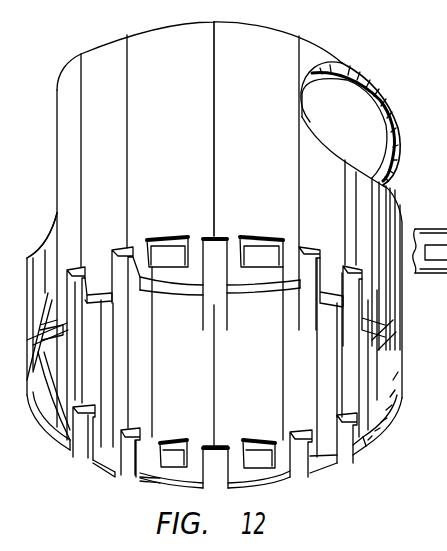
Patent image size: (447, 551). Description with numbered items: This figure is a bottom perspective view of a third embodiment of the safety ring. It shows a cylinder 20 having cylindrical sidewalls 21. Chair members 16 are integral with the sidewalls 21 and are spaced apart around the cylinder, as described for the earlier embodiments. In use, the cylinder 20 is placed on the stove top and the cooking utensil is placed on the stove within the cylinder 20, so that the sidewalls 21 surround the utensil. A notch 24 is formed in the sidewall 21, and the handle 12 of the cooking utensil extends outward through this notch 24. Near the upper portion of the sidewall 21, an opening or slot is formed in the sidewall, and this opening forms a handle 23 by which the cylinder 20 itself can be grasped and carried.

The handle 12 is at (417, 230).
The chair members 16 is at (265, 283).
The cylinder 20 is at (360, 43).
The cylindrical sidewalls 21 is at (248, 134).
The handle 23 is at (391, 104).
The notch 24 is at (40, 245).